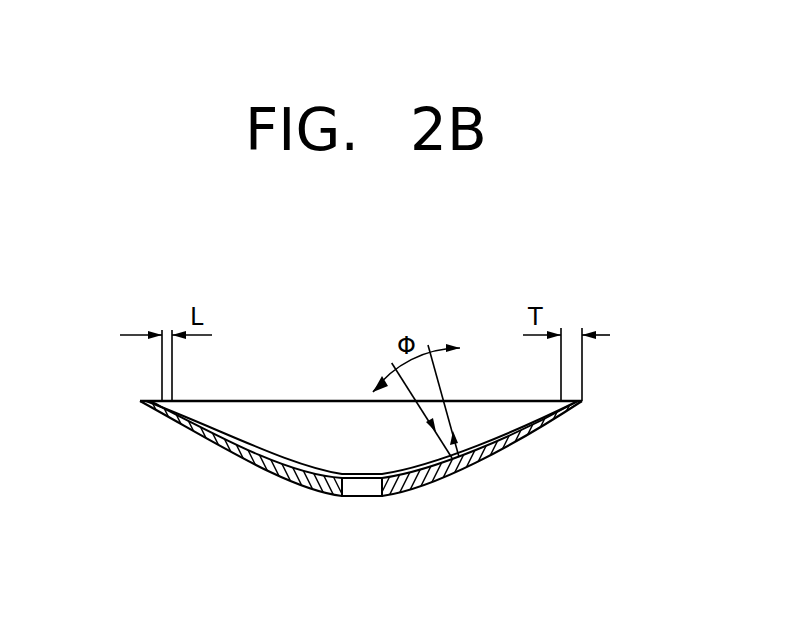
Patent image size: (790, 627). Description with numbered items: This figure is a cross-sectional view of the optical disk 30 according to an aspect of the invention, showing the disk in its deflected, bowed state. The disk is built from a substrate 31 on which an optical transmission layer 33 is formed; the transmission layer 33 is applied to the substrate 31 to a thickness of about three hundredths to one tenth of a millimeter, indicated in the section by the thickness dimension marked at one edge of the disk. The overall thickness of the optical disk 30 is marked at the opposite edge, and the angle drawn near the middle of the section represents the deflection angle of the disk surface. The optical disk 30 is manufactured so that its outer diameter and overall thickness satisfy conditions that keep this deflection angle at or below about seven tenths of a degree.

The optical disk 30 is at (527, 454).
The substrate 31 is at (548, 421).
The optical transmission layer 33 is at (516, 425).